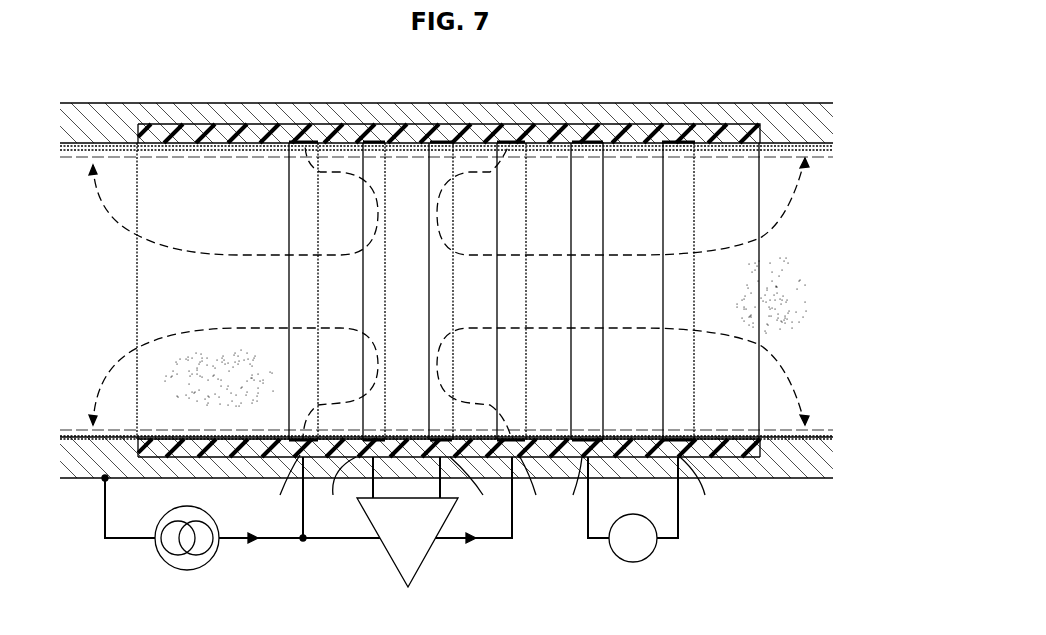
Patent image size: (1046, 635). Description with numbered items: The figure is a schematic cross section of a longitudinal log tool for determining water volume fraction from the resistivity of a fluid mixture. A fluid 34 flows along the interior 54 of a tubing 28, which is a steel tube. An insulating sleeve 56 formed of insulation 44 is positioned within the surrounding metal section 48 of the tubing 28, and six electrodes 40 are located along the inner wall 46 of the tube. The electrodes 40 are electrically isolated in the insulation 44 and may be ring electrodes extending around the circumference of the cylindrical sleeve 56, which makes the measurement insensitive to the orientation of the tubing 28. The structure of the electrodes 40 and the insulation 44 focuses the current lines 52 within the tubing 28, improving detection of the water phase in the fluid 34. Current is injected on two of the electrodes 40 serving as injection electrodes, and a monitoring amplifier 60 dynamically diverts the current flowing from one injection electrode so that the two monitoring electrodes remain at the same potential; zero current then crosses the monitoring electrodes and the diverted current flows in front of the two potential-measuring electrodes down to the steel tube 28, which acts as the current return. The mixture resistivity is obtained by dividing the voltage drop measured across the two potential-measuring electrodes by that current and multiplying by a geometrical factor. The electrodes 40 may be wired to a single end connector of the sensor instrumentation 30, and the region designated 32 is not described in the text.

The tubing 28 is at (185, 103).
The interior 54 is at (240, 170).
The insulation 44 is at (276, 124).
The electrodes 40 is at (438, 135).
The insulating sleeve 56 is at (481, 114).
The metal section 48 is at (718, 130).
The inner wall 46 is at (774, 142).
The current lines 52 is at (229, 255).
The fluid 34 is at (485, 332).
The flow channel 32 is at (588, 411).
The sensor instrumentation 30 is at (698, 555).
The monitoring amplifier 60 is at (407, 542).